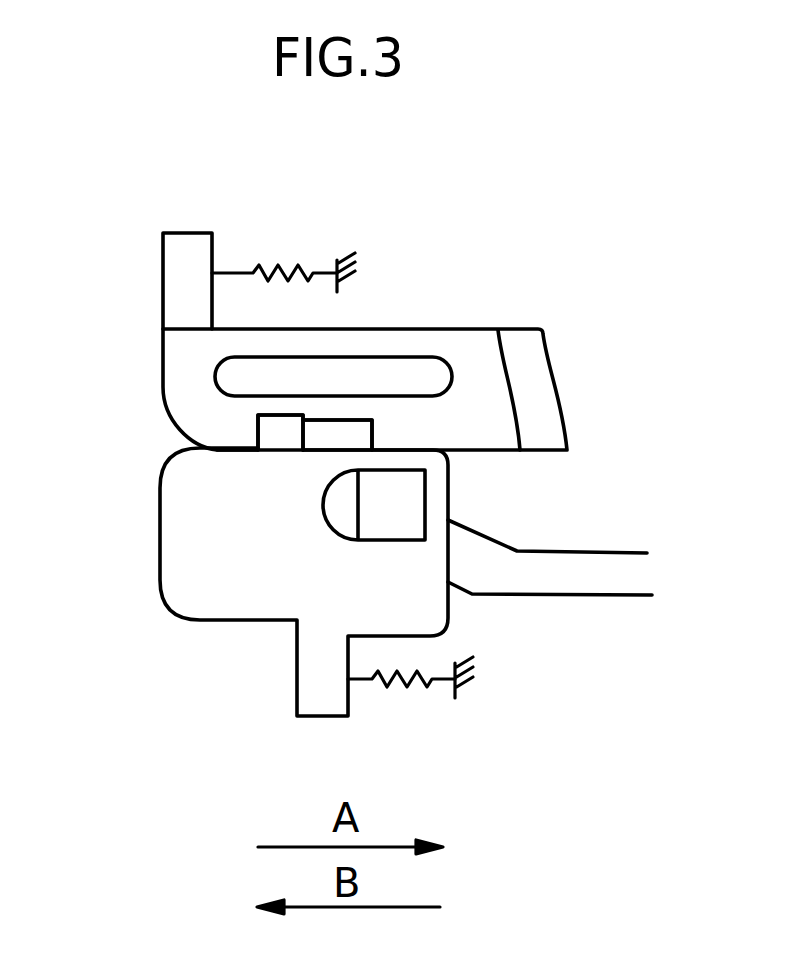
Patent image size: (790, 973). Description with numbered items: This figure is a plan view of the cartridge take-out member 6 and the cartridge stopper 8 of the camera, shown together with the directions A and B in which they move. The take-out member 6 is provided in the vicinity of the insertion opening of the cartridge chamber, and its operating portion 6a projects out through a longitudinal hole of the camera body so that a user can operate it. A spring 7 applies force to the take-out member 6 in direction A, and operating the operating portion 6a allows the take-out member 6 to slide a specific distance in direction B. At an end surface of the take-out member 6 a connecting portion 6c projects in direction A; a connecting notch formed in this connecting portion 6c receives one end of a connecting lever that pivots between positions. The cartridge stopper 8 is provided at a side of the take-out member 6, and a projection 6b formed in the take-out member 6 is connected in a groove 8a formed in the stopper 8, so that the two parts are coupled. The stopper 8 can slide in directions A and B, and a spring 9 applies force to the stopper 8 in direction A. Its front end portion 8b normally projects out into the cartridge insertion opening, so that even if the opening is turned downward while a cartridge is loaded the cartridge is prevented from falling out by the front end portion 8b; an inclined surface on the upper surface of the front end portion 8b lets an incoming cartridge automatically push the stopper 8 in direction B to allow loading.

The cartridge take-out member 6 is at (198, 622).
The operating portion 6a is at (415, 503).
The projection 6b is at (258, 424).
The connecting portion 6c is at (573, 597).
The spring 7 is at (410, 690).
The cartridge stopper 8 is at (162, 372).
The groove 8a is at (358, 434).
The front end portion 8b is at (542, 389).
The spring 9 is at (285, 268).